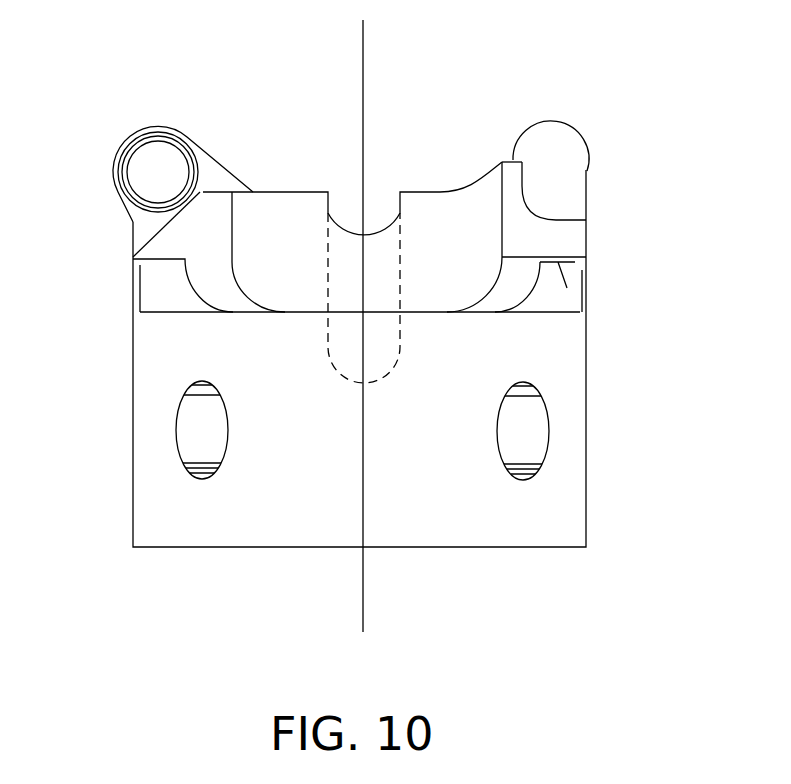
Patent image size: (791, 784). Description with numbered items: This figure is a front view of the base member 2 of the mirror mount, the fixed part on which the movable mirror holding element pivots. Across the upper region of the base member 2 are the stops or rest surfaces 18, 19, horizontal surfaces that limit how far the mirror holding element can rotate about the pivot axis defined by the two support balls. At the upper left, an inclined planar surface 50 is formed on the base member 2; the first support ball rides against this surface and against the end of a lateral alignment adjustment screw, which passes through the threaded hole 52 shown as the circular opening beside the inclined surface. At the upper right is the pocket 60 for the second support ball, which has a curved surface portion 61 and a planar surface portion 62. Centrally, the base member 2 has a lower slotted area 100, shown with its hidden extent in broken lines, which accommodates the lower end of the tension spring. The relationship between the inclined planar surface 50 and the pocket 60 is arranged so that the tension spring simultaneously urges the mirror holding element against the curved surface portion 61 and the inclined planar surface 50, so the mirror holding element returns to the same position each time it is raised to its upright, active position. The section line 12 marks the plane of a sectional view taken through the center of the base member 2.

The base member 2 is at (572, 438).
The section line 12 is at (278, 20).
The stop or rest surface 18 is at (158, 259).
The stop or rest surface 19 is at (512, 160).
The inclined planar surface 50 is at (155, 234).
The threaded hole 52 is at (120, 155).
The pocket 60 is at (565, 127).
The curved surface portion 61 is at (532, 207).
The planar surface portion 62 is at (562, 160).
The lower slotted area 100 is at (370, 218).